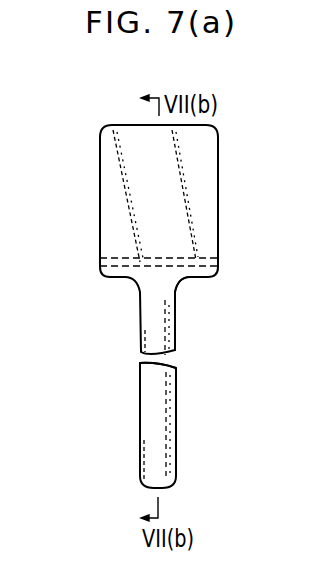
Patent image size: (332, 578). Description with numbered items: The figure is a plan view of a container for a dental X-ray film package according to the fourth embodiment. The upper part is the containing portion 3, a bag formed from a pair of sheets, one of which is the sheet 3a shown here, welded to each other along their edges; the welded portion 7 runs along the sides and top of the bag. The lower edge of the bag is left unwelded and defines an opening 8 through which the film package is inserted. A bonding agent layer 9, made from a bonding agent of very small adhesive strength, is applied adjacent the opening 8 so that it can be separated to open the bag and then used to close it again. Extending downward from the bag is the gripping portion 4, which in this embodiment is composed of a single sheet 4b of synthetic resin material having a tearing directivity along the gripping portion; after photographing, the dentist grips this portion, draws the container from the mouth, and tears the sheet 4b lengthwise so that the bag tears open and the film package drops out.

The containing portion 3 is at (87, 235).
The sheet 3a is at (202, 213).
The welded portion 7 is at (128, 125).
The bonding agent layer 9 is at (121, 265).
The opening 8 is at (178, 287).
The sheet 4b is at (172, 407).
The gripping portion 4 is at (121, 415).